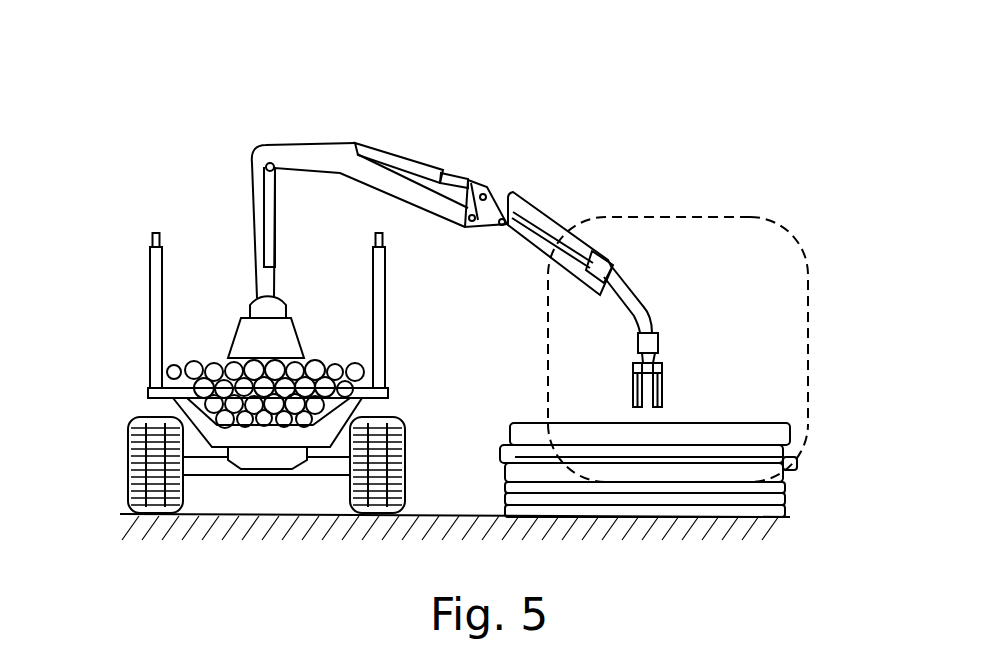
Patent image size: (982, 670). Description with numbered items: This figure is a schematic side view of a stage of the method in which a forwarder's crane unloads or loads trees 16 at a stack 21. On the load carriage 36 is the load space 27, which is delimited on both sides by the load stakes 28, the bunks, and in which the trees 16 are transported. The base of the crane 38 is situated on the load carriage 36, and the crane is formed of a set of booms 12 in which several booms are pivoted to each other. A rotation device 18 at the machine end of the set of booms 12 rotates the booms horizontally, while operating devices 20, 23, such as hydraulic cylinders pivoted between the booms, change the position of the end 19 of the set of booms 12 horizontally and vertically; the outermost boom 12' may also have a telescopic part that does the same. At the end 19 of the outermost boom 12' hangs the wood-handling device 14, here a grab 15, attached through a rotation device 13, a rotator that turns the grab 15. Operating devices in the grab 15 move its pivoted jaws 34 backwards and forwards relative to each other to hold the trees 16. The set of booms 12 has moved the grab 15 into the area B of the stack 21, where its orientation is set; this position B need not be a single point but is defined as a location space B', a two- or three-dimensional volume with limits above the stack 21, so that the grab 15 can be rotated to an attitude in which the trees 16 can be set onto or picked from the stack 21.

The set of booms 12 is at (584, 185).
The outermost boom 12' is at (660, 210).
The rotation device 13 is at (700, 295).
The wood-handling device 14 is at (660, 380).
The grab 15 is at (735, 295).
The trees 16 is at (468, 452).
The rotation device of the set of booms 18 is at (242, 302).
The end of the set of booms 19 is at (668, 278).
The operating device 20 is at (416, 165).
The stack 21 is at (784, 398).
The operating device 23 is at (271, 249).
The load space 27 is at (477, 222).
The load stakes 28 is at (380, 318).
The jaws 34 is at (634, 384).
The load carriage 36 is at (253, 313).
The base of the crane 38 is at (283, 352).
The position of the end of the set of booms B is at (726, 303).
The location space B' is at (827, 320).